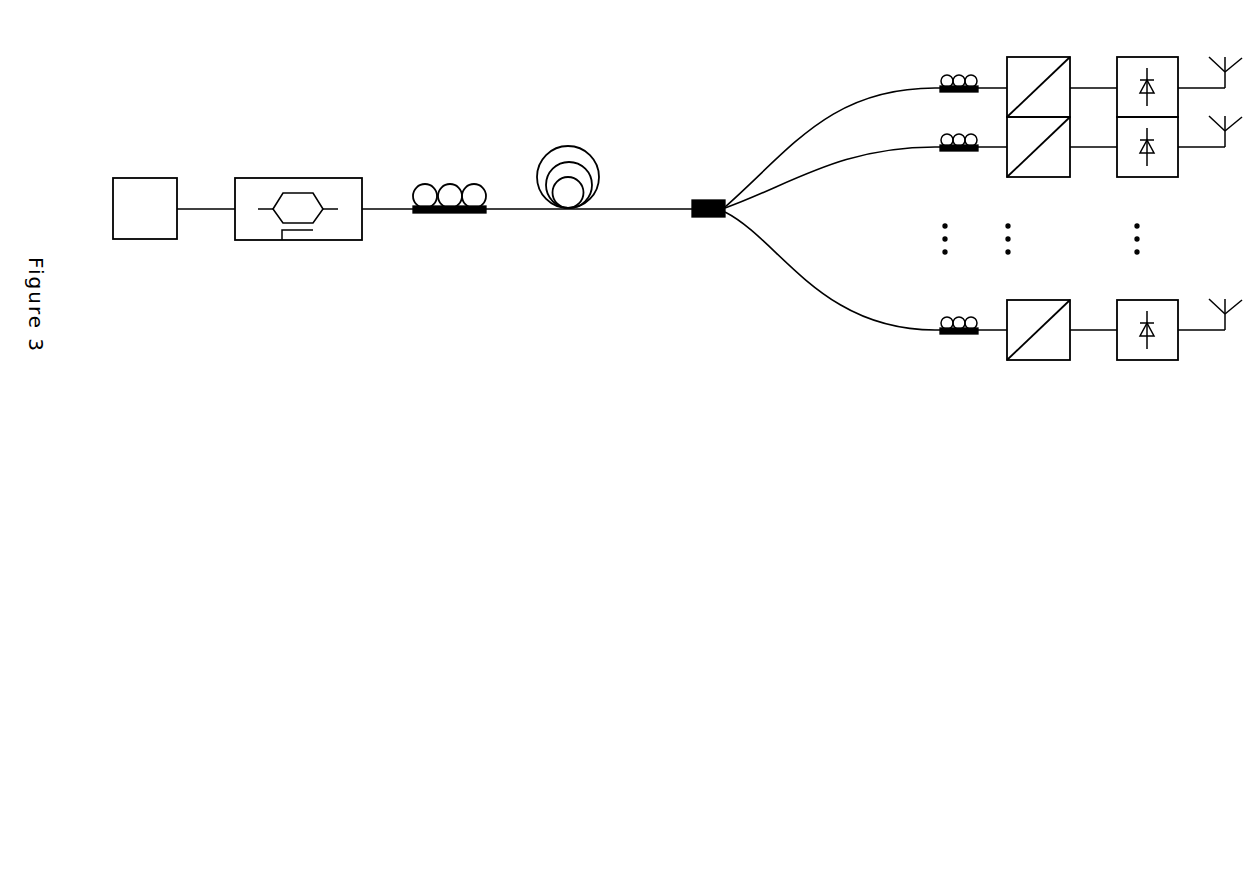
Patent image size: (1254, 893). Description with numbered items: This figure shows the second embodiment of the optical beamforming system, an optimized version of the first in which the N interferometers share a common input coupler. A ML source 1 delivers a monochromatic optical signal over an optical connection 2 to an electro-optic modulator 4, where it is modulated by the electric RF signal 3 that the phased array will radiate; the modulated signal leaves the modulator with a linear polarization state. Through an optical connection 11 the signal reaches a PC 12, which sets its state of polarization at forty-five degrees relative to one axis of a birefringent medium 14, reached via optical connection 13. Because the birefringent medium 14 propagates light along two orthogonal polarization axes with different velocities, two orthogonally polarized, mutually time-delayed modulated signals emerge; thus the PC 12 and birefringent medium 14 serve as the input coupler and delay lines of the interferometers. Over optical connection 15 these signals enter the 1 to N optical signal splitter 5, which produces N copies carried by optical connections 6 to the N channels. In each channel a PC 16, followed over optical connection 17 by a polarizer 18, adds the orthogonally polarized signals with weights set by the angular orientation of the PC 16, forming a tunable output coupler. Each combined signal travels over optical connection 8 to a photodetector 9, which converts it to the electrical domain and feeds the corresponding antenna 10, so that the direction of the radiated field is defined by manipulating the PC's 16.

The ML source 1 is at (144, 263).
The optical connection 2 is at (206, 231).
The electric RF signal 3 is at (283, 248).
The electro-optic modulator 4 is at (345, 263).
The optical connection 11 is at (393, 235).
The polarization controller 12 is at (451, 235).
The optical connection 13 is at (517, 235).
The birefringent medium 14 is at (567, 235).
The optical connection 15 is at (642, 235).
The 1 to N optical signal splitter 5 is at (711, 235).
The optical connection 6 is at (843, 341).
The polarization controller 16 is at (960, 355).
The optical connection 17 is at (991, 351).
The polarizer 18 is at (1042, 546).
The optical connection 8 is at (1096, 355).
The photodetector 9 is at (1150, 546).
The antenna 10 is at (1220, 355).